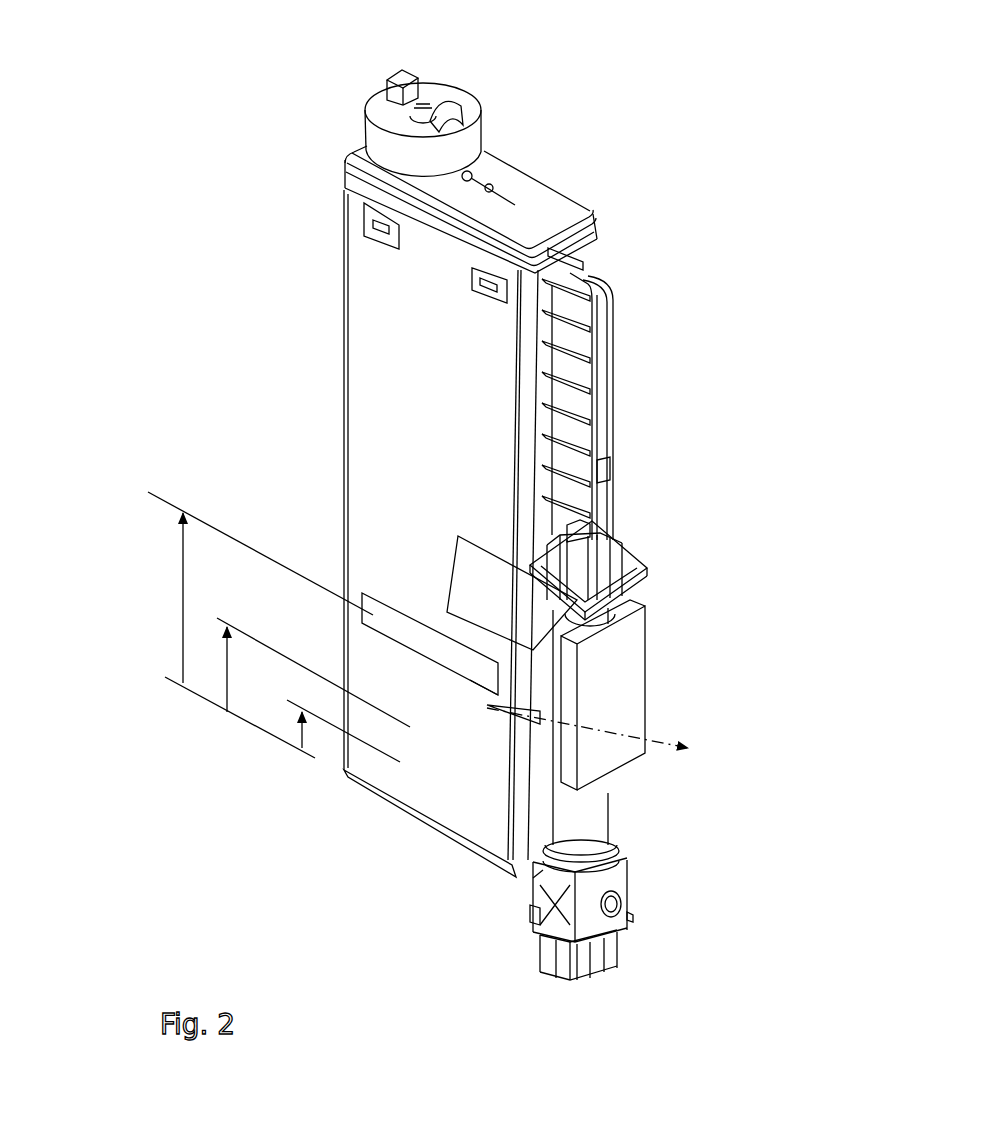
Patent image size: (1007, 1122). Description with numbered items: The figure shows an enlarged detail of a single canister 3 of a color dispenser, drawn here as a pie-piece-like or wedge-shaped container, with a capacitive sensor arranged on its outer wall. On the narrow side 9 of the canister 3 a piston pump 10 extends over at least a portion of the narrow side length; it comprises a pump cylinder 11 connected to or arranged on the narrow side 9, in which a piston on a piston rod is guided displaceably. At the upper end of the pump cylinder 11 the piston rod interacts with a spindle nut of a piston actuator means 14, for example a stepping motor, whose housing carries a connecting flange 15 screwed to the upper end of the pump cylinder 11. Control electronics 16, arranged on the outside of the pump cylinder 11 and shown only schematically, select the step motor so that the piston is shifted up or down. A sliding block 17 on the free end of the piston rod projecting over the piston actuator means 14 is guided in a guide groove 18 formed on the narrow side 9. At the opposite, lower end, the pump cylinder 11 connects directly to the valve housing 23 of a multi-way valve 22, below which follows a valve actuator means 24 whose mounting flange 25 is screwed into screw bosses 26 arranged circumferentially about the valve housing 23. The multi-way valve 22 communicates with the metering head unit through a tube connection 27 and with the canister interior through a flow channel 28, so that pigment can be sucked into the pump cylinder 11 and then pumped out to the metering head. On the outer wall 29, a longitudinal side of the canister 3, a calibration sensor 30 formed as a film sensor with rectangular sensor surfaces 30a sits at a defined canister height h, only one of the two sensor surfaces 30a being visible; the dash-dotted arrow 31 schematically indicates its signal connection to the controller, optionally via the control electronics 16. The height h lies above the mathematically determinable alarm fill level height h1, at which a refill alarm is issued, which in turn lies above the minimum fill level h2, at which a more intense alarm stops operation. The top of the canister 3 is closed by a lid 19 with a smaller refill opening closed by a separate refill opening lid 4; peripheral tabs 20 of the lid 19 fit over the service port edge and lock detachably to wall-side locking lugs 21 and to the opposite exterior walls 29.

The canister 3 is at (605, 194).
The refill opening lid 4 is at (468, 104).
The narrow side 9 is at (618, 398).
The piston pump 10 is at (470, 846).
The pump cylinder 11 is at (592, 818).
The piston actuator means 14 is at (620, 525).
The connecting flange 15 is at (632, 582).
The control electronics 16 is at (630, 688).
The sliding block 17 is at (610, 463).
The guide groove 18 is at (613, 357).
The lid 19 is at (453, 190).
The tabs 20 is at (498, 297).
The locking lugs 21 is at (375, 223).
The multi-way valve 22 is at (625, 885).
The valve housing 23 is at (532, 917).
The valve actuator means 24 is at (613, 957).
The mounting flange 25 is at (630, 917).
The screw bosses 26 is at (535, 875).
The tube connection 27 is at (577, 977).
The flow channel 28 is at (562, 813).
The outer wall 29 is at (443, 478).
The calibration sensor 30 is at (458, 681).
The sensor surfaces 30a is at (407, 636).
The dash-dotted arrow 31 is at (497, 704).
The canister height h is at (183, 593).
The alarm fill level height h1 is at (227, 668).
The minimum fill level h2 is at (302, 732).